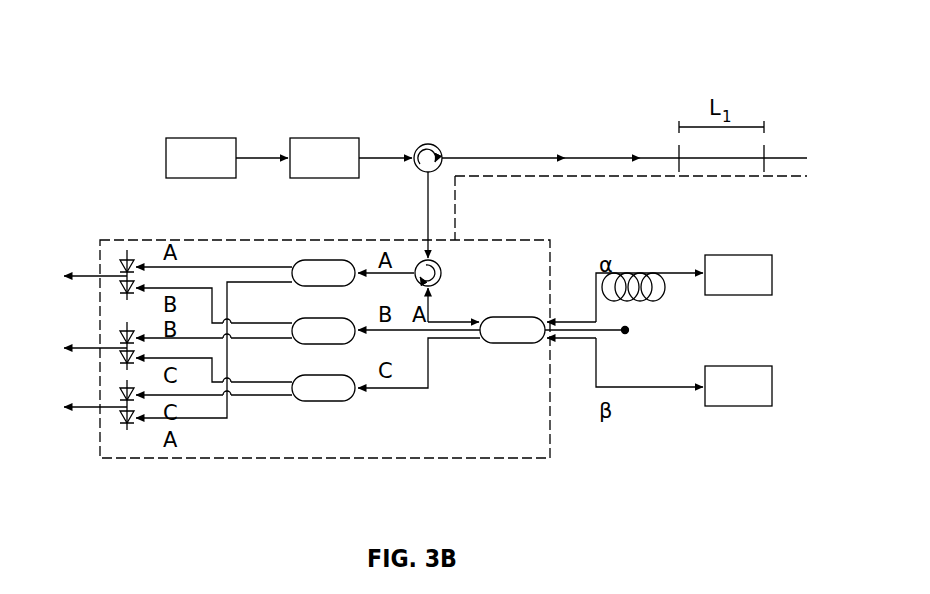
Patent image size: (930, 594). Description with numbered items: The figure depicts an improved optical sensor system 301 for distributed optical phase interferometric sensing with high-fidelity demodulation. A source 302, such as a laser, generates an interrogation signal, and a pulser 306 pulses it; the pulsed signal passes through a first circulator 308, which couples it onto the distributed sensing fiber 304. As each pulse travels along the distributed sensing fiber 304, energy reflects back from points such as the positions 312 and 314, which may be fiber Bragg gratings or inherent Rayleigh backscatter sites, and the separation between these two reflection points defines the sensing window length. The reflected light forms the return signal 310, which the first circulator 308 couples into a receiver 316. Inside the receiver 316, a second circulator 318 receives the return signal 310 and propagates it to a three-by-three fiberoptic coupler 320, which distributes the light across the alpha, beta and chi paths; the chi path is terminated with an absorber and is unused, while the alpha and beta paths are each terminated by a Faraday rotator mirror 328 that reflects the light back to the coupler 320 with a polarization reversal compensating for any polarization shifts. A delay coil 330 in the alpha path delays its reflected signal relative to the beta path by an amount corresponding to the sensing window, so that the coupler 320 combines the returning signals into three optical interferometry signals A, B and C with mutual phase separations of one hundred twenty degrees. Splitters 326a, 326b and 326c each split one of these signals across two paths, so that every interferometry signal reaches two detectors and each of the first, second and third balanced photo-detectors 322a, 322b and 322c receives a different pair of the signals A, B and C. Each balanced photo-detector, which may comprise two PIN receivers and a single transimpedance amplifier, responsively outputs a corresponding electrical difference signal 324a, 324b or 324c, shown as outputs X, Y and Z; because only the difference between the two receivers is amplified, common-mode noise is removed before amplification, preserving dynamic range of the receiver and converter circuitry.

The optical sensor system 301 is at (122, 48).
The source 302 is at (200, 138).
The distributed sensing fiber 304 is at (516, 158).
The pulser 306 is at (323, 138).
The first circulator 308 is at (428, 144).
The return signal 310 is at (625, 178).
The reflection position 312 is at (679, 148).
The reflection position 314 is at (764, 148).
The receiver 316 is at (170, 240).
The second circulator 318 is at (456, 284).
The 3x3 fiberoptic coupler 320 is at (512, 343).
The first balanced photo-detector 322a is at (127, 255).
The second balanced photo-detector 322b is at (122, 335).
The third balanced photo-detector 322c is at (127, 425).
The first electrical difference signal 324a is at (80, 272).
The second electrical difference signal 324b is at (100, 350).
The third electrical difference signal 324c is at (83, 410).
The first splitter 326a is at (322, 258).
The second splitter 326b is at (343, 318).
The third splitter 326c is at (335, 402).
The Faraday rotator mirror 328 is at (745, 255).
The delay coil 330 is at (658, 300).